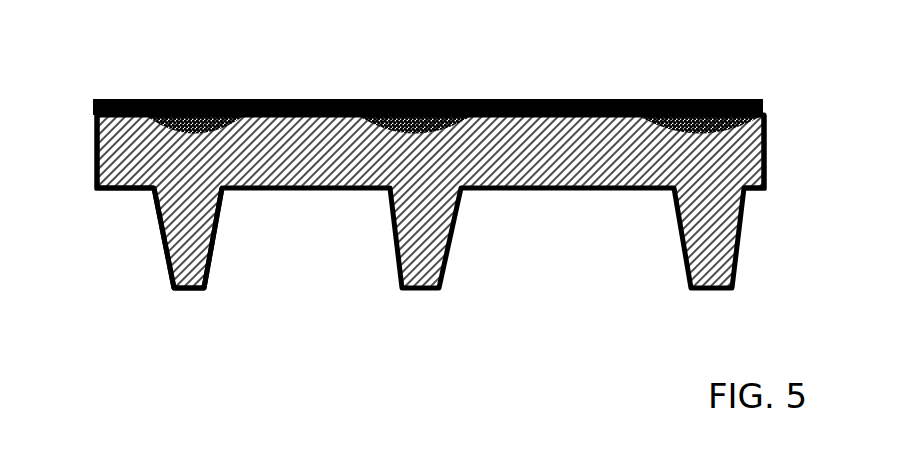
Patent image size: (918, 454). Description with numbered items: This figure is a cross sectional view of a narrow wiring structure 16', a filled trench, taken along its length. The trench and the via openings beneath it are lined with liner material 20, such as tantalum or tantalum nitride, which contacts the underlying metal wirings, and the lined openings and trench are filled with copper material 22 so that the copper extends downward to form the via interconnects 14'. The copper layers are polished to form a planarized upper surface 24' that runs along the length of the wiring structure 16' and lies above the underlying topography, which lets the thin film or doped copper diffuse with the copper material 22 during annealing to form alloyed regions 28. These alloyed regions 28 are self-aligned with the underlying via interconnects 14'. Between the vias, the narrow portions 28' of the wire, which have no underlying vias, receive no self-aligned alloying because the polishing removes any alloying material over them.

The via interconnect 14' is at (430, 201).
The wiring structure 16' is at (405, 132).
The liner material 20 is at (95, 188).
The copper material 22 is at (172, 218).
The planarized upper surface 24' is at (789, 186).
The alloyed regions 28 is at (454, 198).
The narrow portions 28' is at (428, 74).